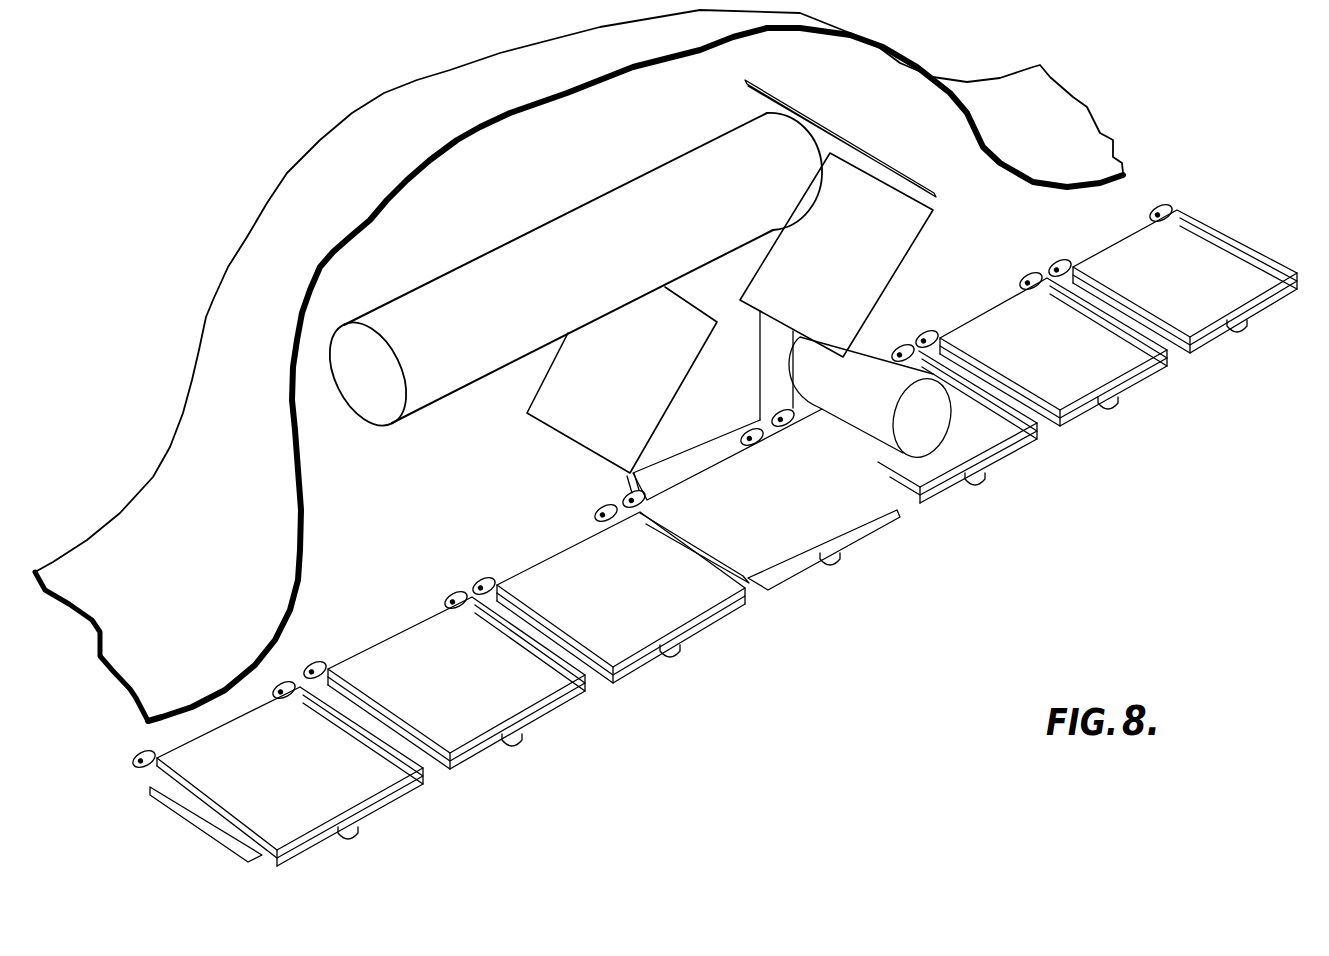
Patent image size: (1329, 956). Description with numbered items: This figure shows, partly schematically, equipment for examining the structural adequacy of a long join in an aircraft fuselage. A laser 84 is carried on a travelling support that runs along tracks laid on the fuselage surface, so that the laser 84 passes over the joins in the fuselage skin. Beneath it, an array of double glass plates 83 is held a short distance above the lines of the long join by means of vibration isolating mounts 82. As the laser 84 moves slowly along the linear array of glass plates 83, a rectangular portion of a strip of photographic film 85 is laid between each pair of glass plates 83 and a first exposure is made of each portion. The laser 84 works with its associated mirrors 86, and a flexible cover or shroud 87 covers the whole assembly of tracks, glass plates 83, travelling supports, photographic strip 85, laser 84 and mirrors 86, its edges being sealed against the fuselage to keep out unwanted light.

The vibration isolating mount 82 is at (1242, 327).
The double glass plate 83 is at (1218, 337).
The laser 84 is at (497, 285).
The strip of photographic film 85 is at (880, 474).
The mirror 86 is at (907, 171).
The flexible cover or shroud 87 is at (317, 190).